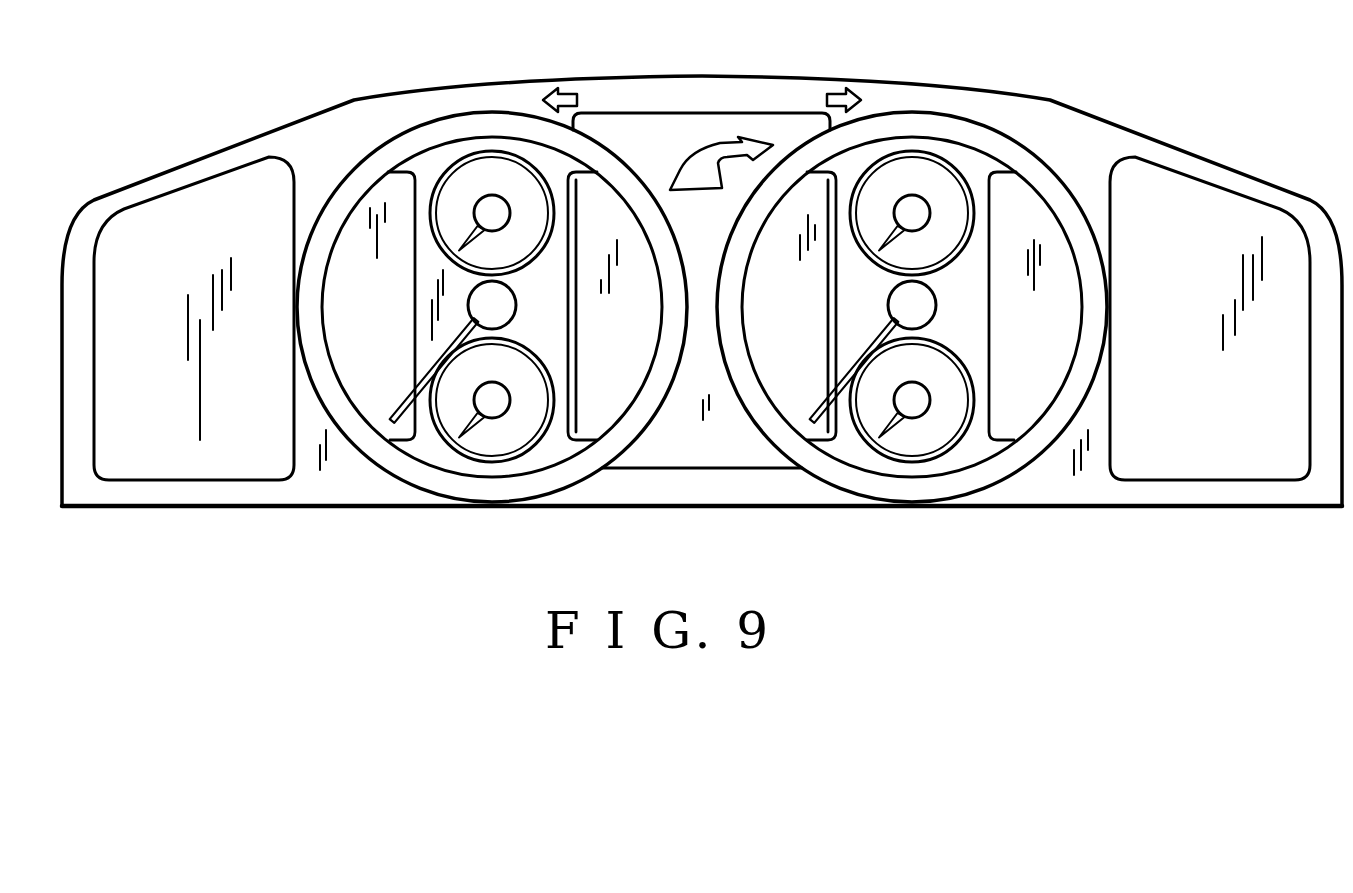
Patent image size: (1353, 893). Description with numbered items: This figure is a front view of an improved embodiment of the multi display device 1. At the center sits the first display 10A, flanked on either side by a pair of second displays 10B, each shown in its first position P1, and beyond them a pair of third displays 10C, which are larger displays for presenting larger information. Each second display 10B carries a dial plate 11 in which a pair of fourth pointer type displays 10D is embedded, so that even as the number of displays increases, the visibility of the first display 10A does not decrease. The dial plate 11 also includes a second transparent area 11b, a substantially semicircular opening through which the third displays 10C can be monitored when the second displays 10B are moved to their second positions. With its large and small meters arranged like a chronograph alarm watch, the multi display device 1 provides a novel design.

The multi display device 1 is at (1160, 127).
The first display 10A is at (703, 115).
The second display 10B is at (600, 132).
The third display 10C is at (182, 210).
The fourth pointer type display 10D is at (440, 158).
The dial plate 11 is at (425, 176).
The second transparent area 11b is at (415, 348).
The first position P1 is at (345, 156).